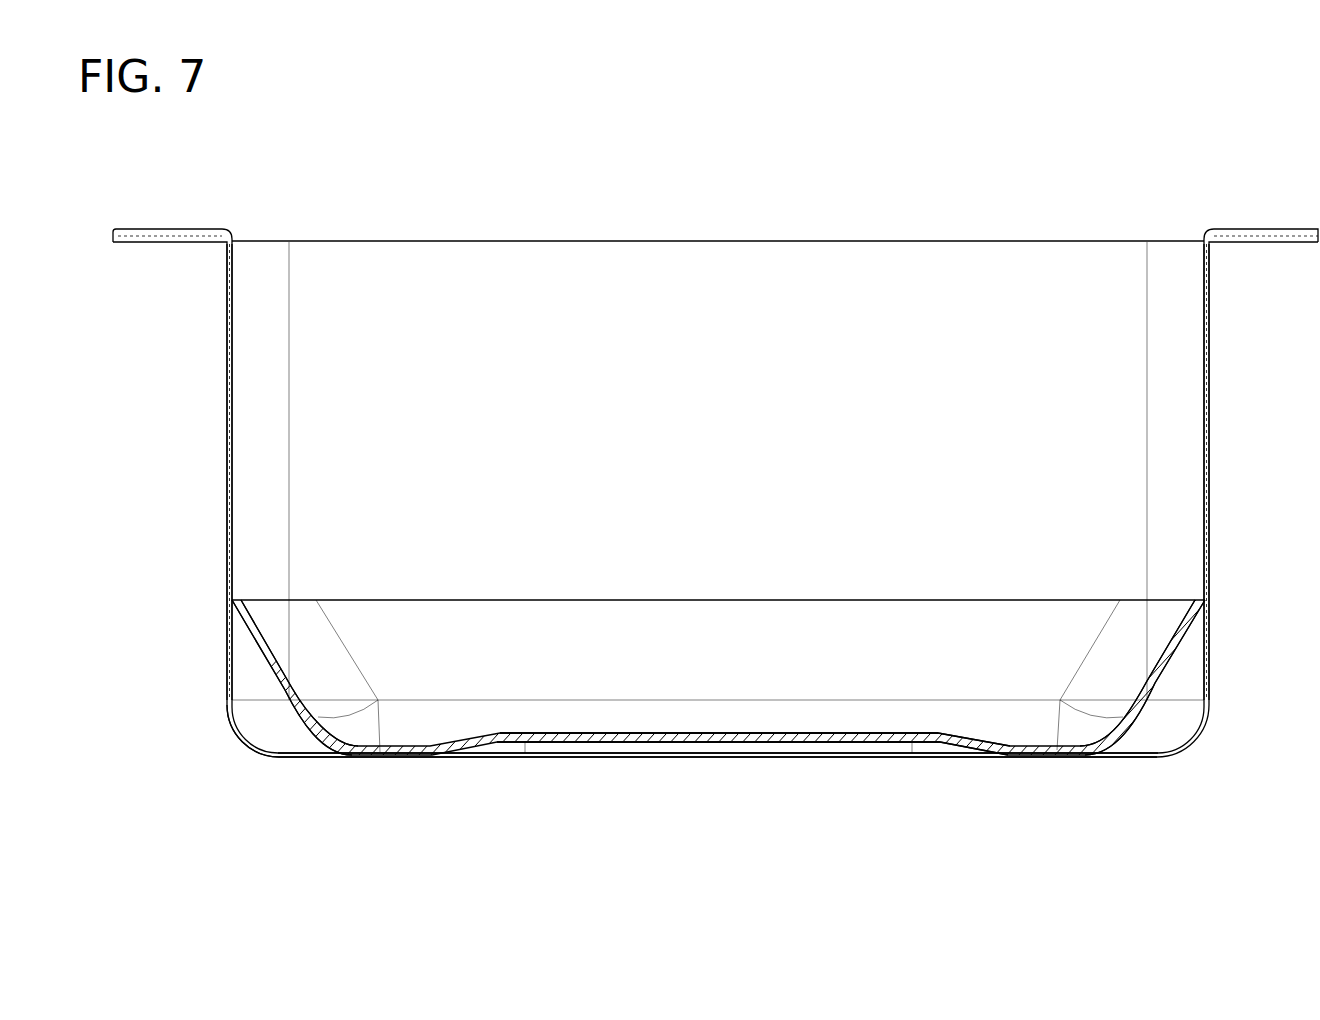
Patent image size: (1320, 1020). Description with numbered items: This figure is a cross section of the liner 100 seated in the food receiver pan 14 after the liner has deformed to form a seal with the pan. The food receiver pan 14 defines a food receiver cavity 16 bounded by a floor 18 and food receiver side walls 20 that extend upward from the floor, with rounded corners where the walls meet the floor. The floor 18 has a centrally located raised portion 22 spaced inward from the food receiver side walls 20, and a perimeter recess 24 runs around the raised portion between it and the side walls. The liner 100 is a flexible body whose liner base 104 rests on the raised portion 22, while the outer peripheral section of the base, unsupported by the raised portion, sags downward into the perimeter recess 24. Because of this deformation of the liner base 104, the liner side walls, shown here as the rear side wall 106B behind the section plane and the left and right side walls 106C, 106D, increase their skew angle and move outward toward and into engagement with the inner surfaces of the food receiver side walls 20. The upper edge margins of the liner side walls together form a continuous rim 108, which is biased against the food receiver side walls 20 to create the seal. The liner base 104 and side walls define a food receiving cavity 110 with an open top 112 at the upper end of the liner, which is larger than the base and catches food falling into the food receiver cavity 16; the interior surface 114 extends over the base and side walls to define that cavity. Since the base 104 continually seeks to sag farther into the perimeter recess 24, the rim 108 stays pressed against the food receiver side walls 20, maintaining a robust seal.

The food receiver pan 14 is at (1152, 226).
The food receiver cavity 16 is at (765, 324).
The floor 18 is at (1036, 796).
The food receiver side walls 20 is at (228, 358).
The raised portion 22 is at (598, 745).
The perimeter recess 24 is at (306, 737).
The liner 100 is at (600, 573).
The liner base 104 is at (1005, 752).
The rear side wall 106B is at (551, 665).
The left side wall 106C is at (266, 663).
The right side wall 106D is at (1170, 661).
The rim 108 is at (990, 600).
The food receiving cavity 110 is at (756, 666).
The open top 112 is at (845, 600).
The interior surface 114 is at (318, 652).